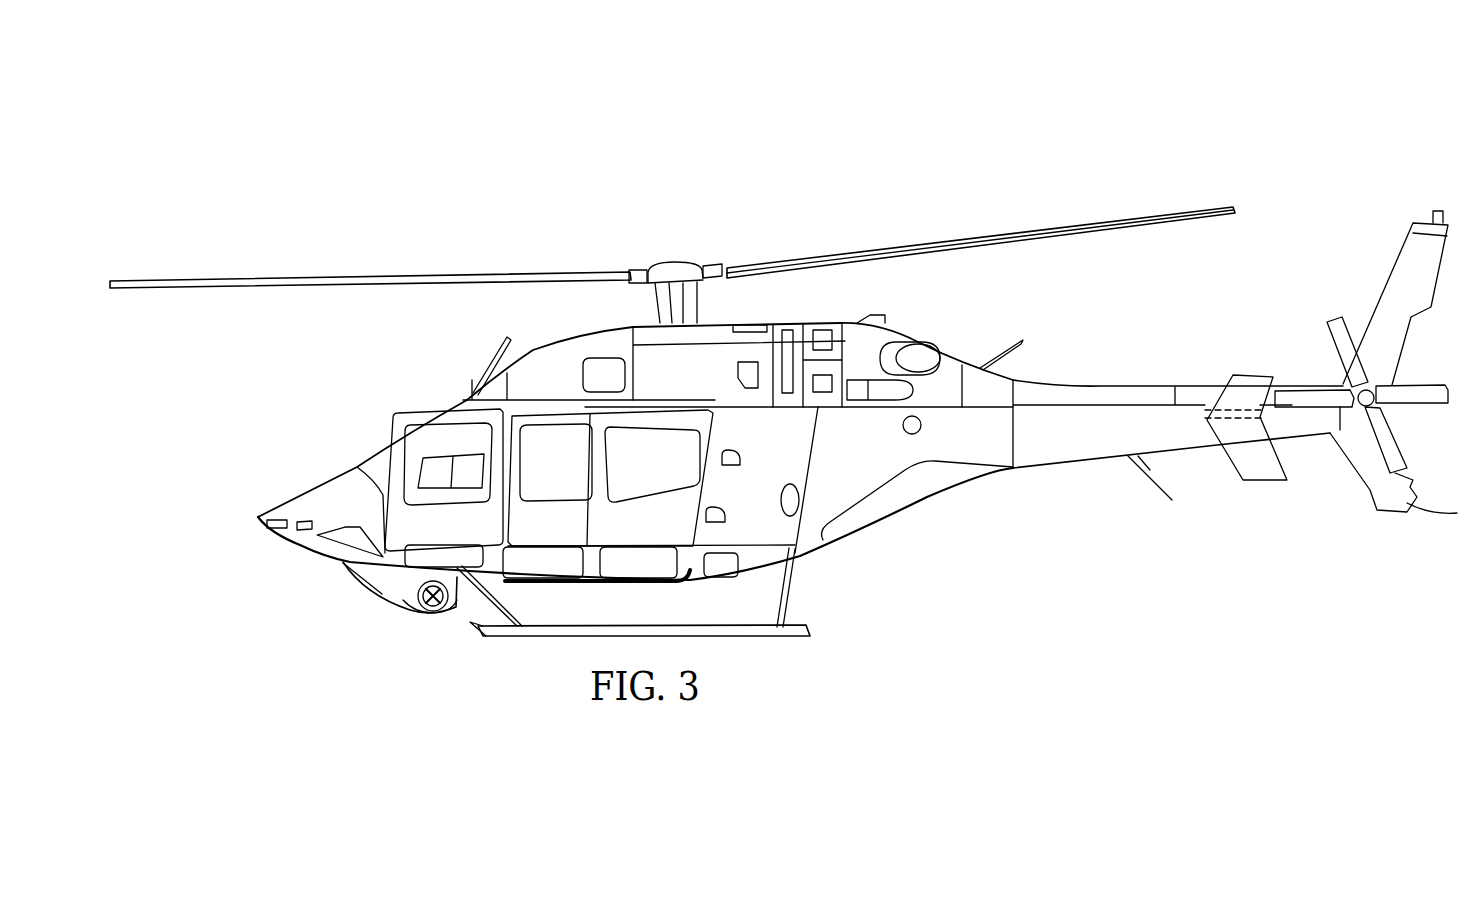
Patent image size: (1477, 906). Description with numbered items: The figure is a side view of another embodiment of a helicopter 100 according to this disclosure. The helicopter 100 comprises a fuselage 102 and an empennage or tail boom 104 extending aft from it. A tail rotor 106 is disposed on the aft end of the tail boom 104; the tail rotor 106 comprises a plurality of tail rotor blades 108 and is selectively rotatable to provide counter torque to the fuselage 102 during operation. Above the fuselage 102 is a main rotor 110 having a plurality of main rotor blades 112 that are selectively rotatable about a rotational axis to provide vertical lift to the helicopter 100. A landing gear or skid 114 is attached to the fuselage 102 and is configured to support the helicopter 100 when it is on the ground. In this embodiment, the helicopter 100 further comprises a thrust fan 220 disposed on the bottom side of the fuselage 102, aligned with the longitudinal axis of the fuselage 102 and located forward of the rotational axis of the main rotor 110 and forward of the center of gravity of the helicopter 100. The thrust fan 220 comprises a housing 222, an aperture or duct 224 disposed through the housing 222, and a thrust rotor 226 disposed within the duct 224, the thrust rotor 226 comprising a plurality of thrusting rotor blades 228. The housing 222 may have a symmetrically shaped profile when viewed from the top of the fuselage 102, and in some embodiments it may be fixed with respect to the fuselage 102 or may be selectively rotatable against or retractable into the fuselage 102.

The helicopter 100 is at (152, 184).
The fuselage 102 is at (300, 493).
The tail boom 104 is at (1103, 385).
The tail rotor 106 is at (1392, 413).
The tail rotor blades 108 is at (1424, 385).
The main rotor 110 is at (661, 259).
The main rotor blades 112 is at (368, 273).
The skid 114 is at (787, 598).
The thrust fan 220 is at (378, 597).
The housing 222 is at (355, 583).
The duct 224 is at (450, 608).
The thrust rotor 226 is at (433, 606).
The thrusting rotor blades 228 is at (415, 603).